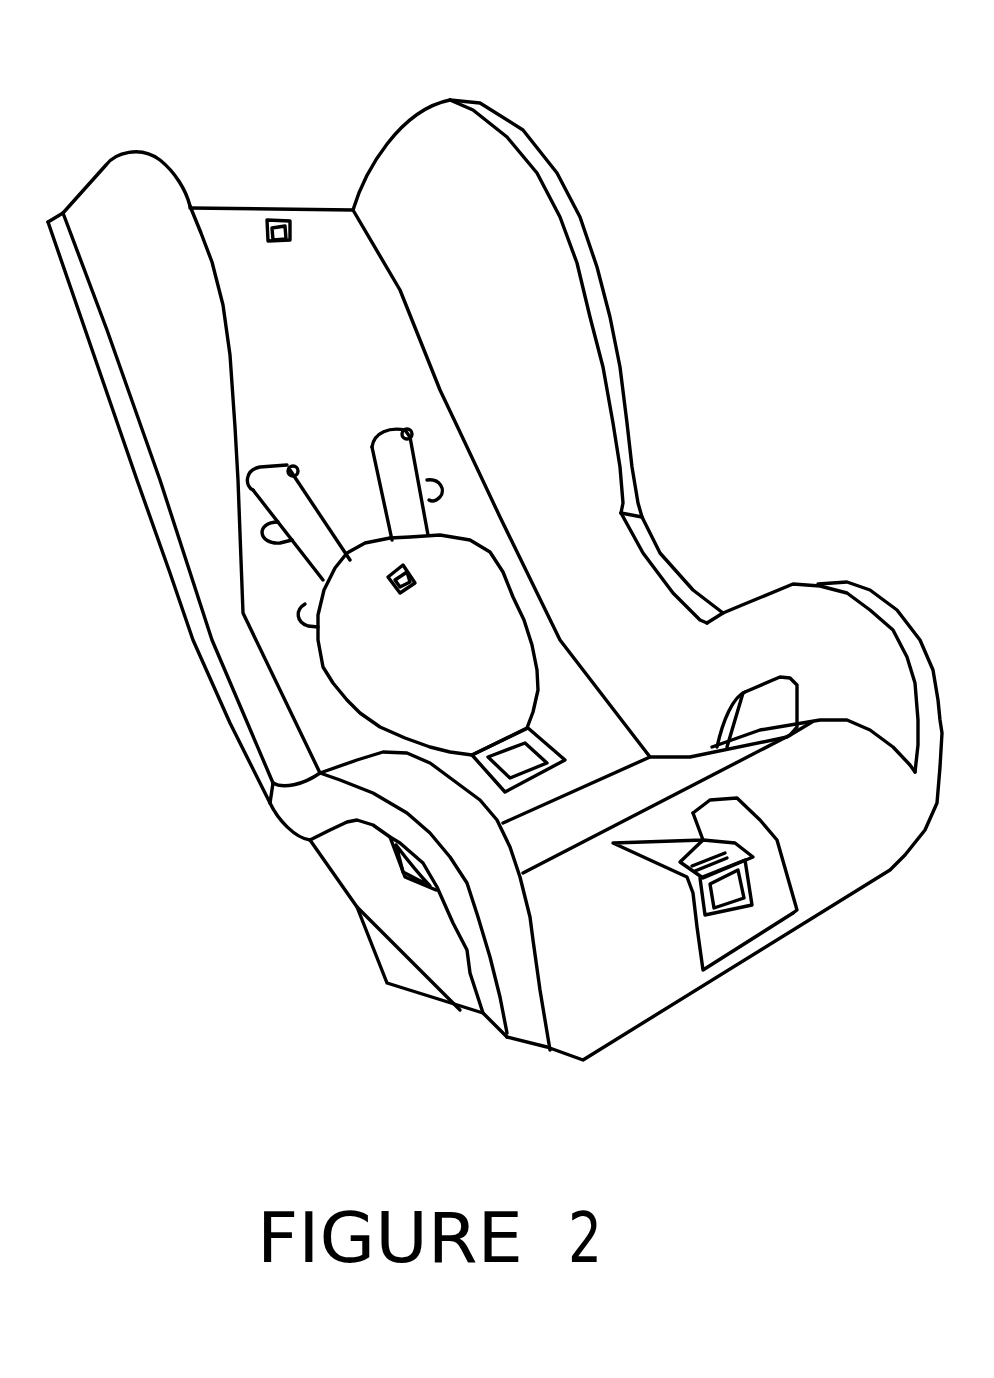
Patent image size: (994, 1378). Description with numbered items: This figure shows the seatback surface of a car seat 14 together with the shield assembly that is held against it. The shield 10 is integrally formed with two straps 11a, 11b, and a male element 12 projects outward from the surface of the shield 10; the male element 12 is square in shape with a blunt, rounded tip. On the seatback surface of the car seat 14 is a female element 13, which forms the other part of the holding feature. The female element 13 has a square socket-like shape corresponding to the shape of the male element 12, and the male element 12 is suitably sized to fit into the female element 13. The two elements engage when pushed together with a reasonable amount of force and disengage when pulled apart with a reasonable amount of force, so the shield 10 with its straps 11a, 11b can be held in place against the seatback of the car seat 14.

The shield 10 is at (350, 703).
The strap 11a is at (327, 517).
The strap 11b is at (377, 497).
The male element 12 is at (415, 594).
The female element 13 is at (280, 249).
The car seat 14 is at (432, 98).